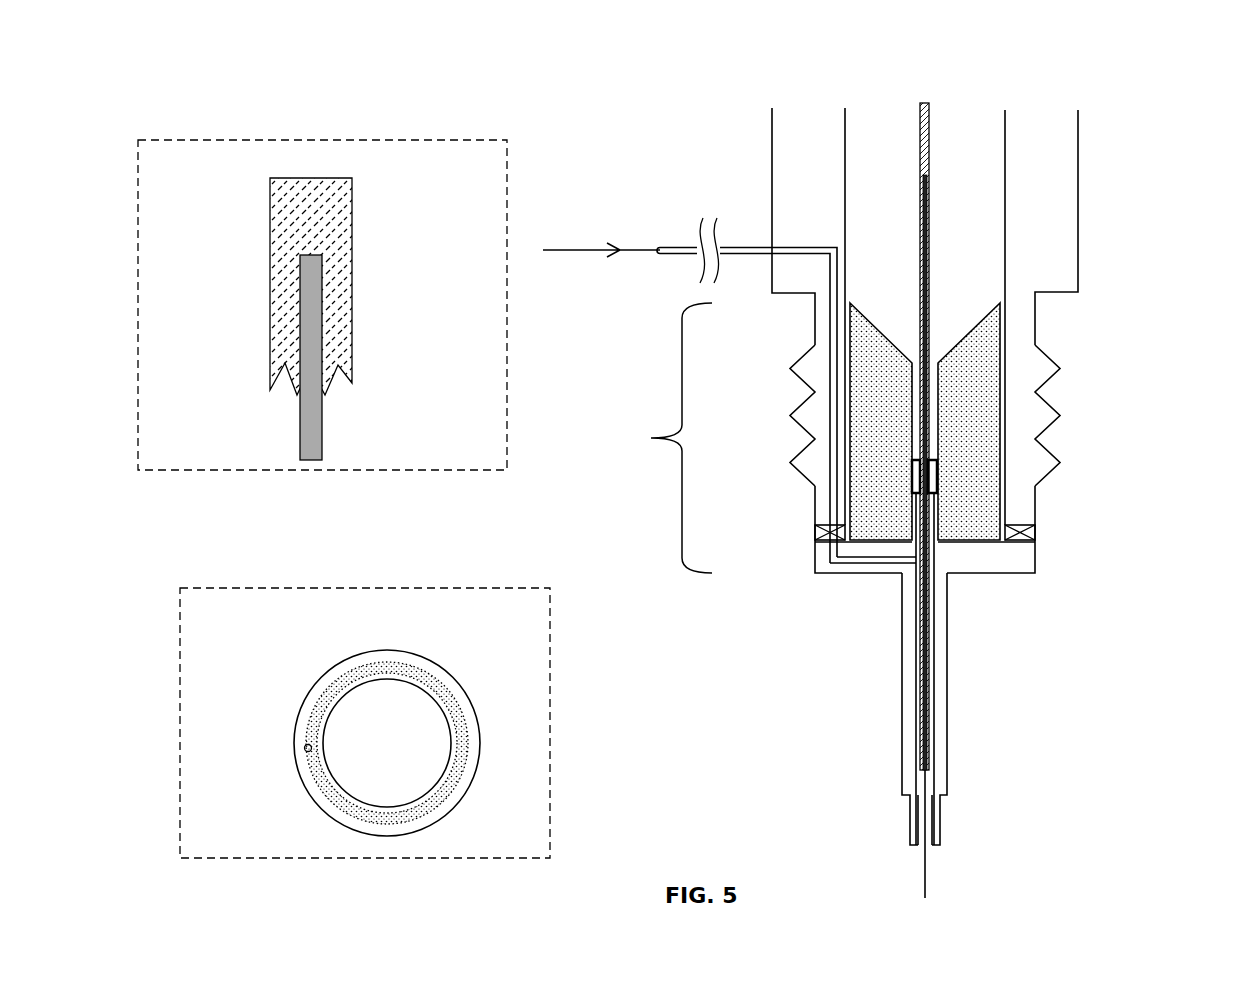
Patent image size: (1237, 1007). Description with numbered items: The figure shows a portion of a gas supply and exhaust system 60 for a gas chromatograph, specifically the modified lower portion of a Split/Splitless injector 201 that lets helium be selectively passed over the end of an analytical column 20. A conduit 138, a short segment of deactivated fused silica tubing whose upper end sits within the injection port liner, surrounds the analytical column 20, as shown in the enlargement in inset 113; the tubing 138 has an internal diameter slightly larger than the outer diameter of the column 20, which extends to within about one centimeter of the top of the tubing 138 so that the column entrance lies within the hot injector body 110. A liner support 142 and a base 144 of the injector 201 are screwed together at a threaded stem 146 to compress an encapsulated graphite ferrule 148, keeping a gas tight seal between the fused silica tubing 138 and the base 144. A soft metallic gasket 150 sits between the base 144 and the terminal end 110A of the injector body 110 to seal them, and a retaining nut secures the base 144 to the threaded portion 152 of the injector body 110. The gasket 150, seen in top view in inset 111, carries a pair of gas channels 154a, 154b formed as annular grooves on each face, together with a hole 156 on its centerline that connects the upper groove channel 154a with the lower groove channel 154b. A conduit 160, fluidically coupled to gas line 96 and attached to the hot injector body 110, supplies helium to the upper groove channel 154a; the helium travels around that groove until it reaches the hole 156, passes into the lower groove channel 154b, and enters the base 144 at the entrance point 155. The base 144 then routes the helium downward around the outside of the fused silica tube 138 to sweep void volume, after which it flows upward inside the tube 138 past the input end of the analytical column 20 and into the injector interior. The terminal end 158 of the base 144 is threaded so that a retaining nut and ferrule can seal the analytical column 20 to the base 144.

The gas supply and exhaust system 60 is at (460, 35).
The analytical column 20 is at (322, 437).
The gas line 96 is at (575, 250).
The injector body 110 is at (1067, 213).
The terminal end of the injector body 110A is at (624, 430).
The inset 111 is at (297, 588).
The inset 113 is at (255, 140).
The conduit 138 is at (350, 227).
The liner support 142 is at (968, 410).
The base 144 is at (980, 573).
The threaded stem 146 is at (934, 517).
The encapsulated graphite ferrule 148 is at (938, 475).
The soft metallic gasket 150 is at (815, 532).
The threaded portion 152 is at (793, 415).
The upper groove channel 154a is at (450, 693).
The lower groove channel 154b is at (1020, 542).
The entrance point 155 is at (830, 547).
The hole 156 is at (305, 752).
The terminal end of base 158 is at (937, 825).
The conduit 160 is at (752, 247).
The SSL injector 201 is at (793, 85).